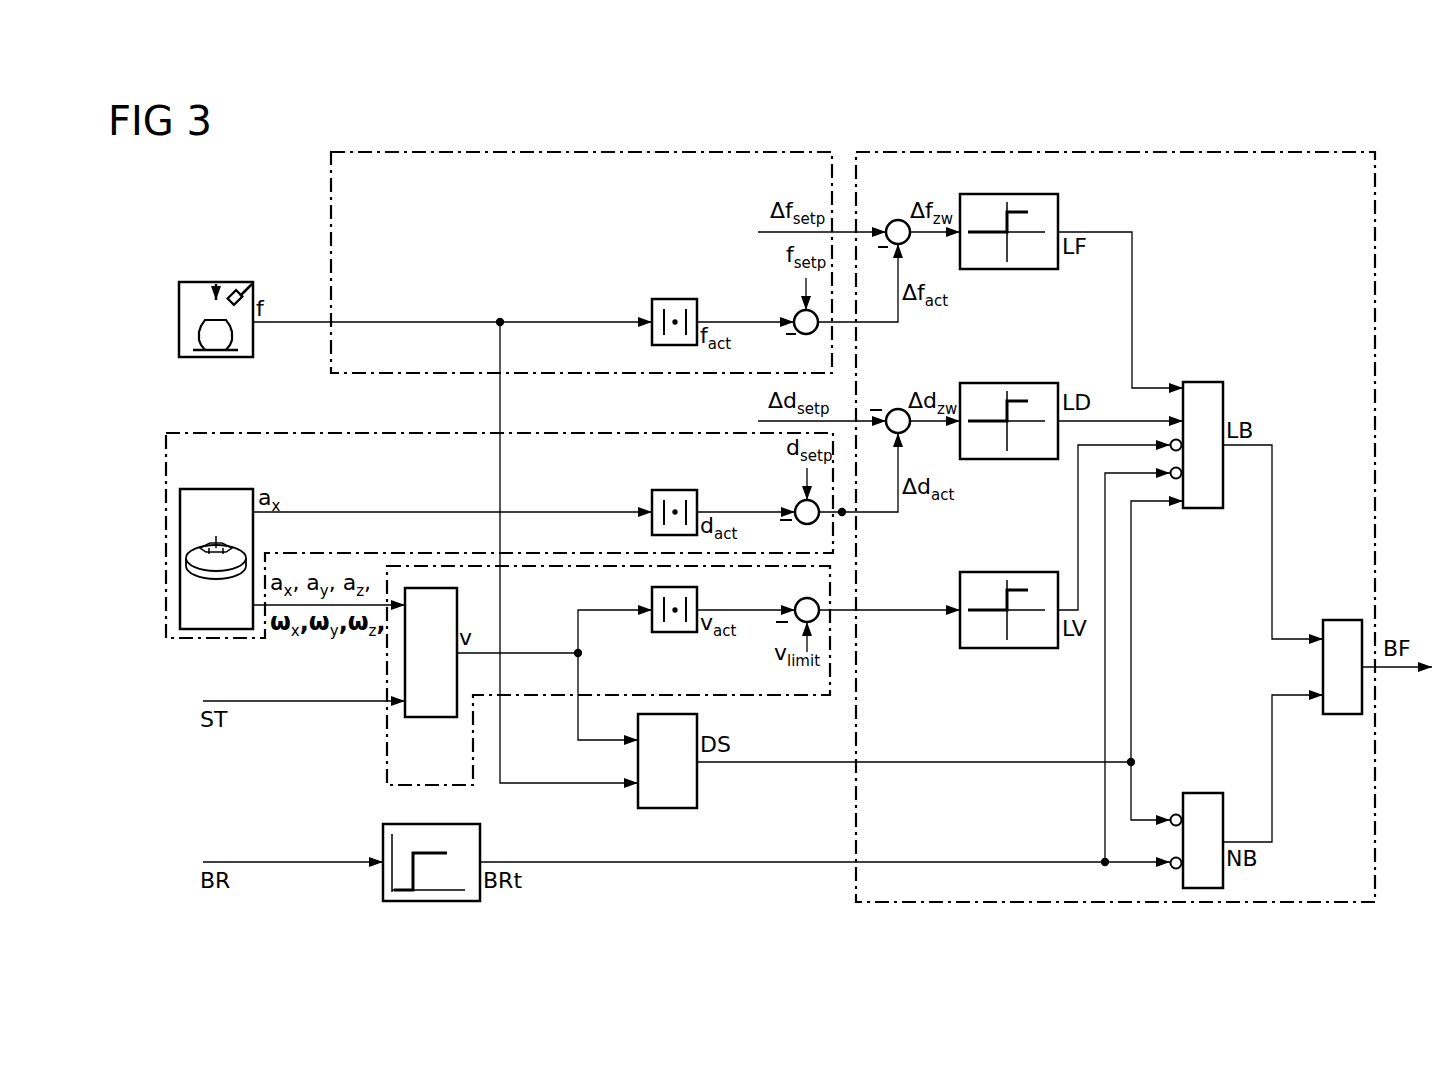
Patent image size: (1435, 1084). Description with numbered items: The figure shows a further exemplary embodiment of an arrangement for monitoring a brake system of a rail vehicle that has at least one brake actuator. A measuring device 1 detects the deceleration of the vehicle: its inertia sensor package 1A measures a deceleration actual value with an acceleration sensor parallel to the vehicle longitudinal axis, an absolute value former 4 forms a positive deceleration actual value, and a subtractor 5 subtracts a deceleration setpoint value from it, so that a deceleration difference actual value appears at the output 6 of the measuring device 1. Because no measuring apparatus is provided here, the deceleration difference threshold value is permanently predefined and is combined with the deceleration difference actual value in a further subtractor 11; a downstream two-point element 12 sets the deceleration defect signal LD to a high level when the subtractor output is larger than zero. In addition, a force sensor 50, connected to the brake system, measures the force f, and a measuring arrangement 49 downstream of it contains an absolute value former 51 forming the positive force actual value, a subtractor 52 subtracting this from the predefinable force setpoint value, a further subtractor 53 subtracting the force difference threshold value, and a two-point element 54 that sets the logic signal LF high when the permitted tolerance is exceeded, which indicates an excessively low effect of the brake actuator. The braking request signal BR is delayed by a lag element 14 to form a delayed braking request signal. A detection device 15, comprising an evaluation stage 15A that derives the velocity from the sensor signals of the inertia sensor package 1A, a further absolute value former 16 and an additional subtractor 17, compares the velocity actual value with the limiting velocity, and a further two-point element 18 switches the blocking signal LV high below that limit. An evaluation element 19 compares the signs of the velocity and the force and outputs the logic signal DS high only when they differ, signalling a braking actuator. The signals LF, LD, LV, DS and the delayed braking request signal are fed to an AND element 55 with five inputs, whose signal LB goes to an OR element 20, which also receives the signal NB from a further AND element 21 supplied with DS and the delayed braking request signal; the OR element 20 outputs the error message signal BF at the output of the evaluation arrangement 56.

The measuring device 1 is at (205, 640).
The inertia sensor package 1A is at (180, 598).
The absolute value former 4 is at (652, 526).
The subtractor 5 is at (798, 522).
The output of the measuring device 6 is at (846, 516).
The further subtractor 11 is at (900, 409).
The two-point element 12 is at (984, 383).
The lag element 14 is at (383, 890).
The detection device 15 is at (528, 697).
The evaluation stage 15A is at (430, 718).
The further absolute value former 16 is at (652, 594).
The additional subtractor 17 is at (797, 604).
The further two-point element 18 is at (990, 572).
The evaluation element 19 is at (697, 786).
The OR element 20 is at (1340, 620).
The further AND element 21 is at (1200, 793).
The measuring arrangement 49 is at (542, 152).
The force sensor 50 is at (214, 282).
The absolute value former 51 is at (652, 338).
The subtractor 52 is at (797, 312).
The further subtractor 53 is at (900, 220).
The two-point element 54 is at (1058, 208).
The AND element 55 is at (1200, 382).
The evaluation arrangement 56 is at (1108, 152).